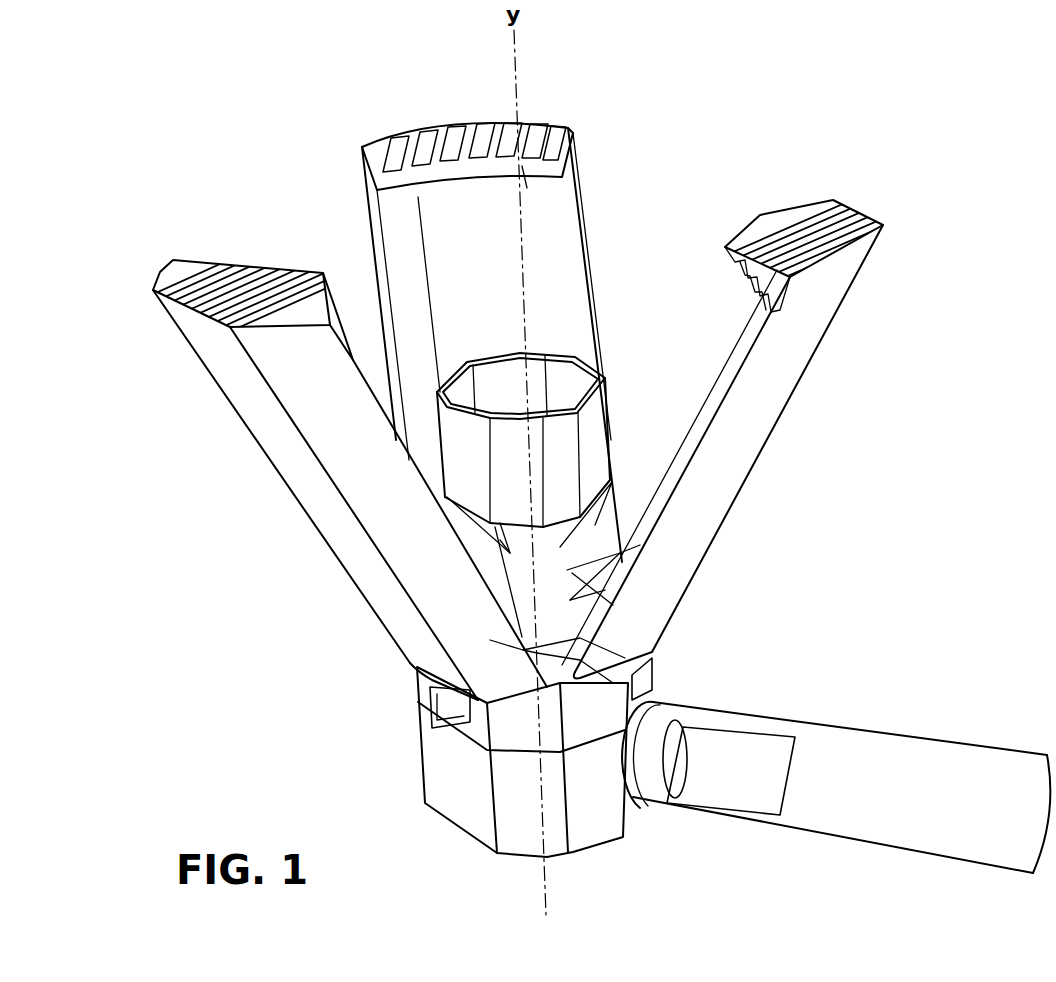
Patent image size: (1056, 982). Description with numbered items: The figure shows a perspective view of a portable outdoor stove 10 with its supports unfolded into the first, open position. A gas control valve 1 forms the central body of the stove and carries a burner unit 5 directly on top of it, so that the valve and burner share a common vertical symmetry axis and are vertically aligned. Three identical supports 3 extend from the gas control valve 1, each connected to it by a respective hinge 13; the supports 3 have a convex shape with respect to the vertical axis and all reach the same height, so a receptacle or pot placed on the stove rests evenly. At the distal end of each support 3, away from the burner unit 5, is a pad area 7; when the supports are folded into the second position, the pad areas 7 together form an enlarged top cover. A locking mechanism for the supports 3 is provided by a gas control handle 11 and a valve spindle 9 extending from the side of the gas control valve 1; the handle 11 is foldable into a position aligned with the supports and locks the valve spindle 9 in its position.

The portable outdoor stove 10 is at (892, 49).
The gas control valve 1 is at (447, 822).
The supports 3 is at (585, 232).
The burner unit 5 is at (606, 378).
The pad area 7 is at (445, 132).
The valve spindle 9 is at (658, 737).
The gas control handle 11 is at (1003, 763).
The hinge 13 is at (450, 710).